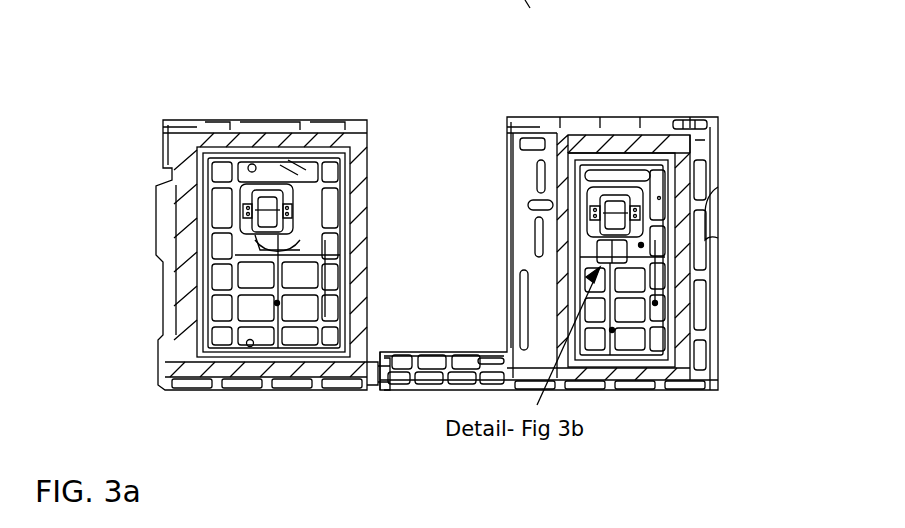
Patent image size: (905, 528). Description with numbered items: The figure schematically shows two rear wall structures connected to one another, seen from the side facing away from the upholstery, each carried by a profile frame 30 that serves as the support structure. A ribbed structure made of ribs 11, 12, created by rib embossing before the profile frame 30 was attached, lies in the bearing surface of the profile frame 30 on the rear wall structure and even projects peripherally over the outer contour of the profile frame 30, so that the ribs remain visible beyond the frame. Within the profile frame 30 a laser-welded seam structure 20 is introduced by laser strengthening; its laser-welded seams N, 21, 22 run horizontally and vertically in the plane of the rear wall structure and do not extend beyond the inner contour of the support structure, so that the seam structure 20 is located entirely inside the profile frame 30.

The profile frame 30 is at (235, 140).
The laser-welded seam structure 20 is at (479, 302).
The laser-welded seams N is at (479, 302).
The laser-welded seam 21 is at (479, 302).
The laser-welded seam 22 is at (277, 303).
The rib 12 is at (612, 330).
The rib 11 is at (641, 245).